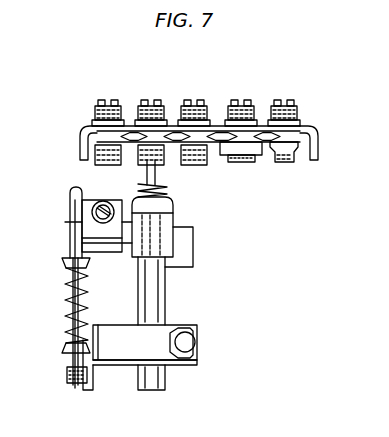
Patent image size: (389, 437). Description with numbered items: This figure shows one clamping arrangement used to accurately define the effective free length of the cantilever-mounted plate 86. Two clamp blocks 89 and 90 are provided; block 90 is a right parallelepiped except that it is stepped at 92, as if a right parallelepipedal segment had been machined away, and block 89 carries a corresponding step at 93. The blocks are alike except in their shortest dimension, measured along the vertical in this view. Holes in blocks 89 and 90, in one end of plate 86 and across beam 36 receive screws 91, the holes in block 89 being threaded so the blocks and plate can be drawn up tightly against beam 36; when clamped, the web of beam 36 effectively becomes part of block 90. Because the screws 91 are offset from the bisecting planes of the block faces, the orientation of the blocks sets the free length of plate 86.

The beam 36 is at (80, 144).
The plate 86 is at (118, 141).
The clamp block 89 is at (243, 148).
The clamp block 90 is at (250, 132).
The screws 91 is at (230, 108).
The step 92 is at (265, 126).
The step 93 is at (260, 157).